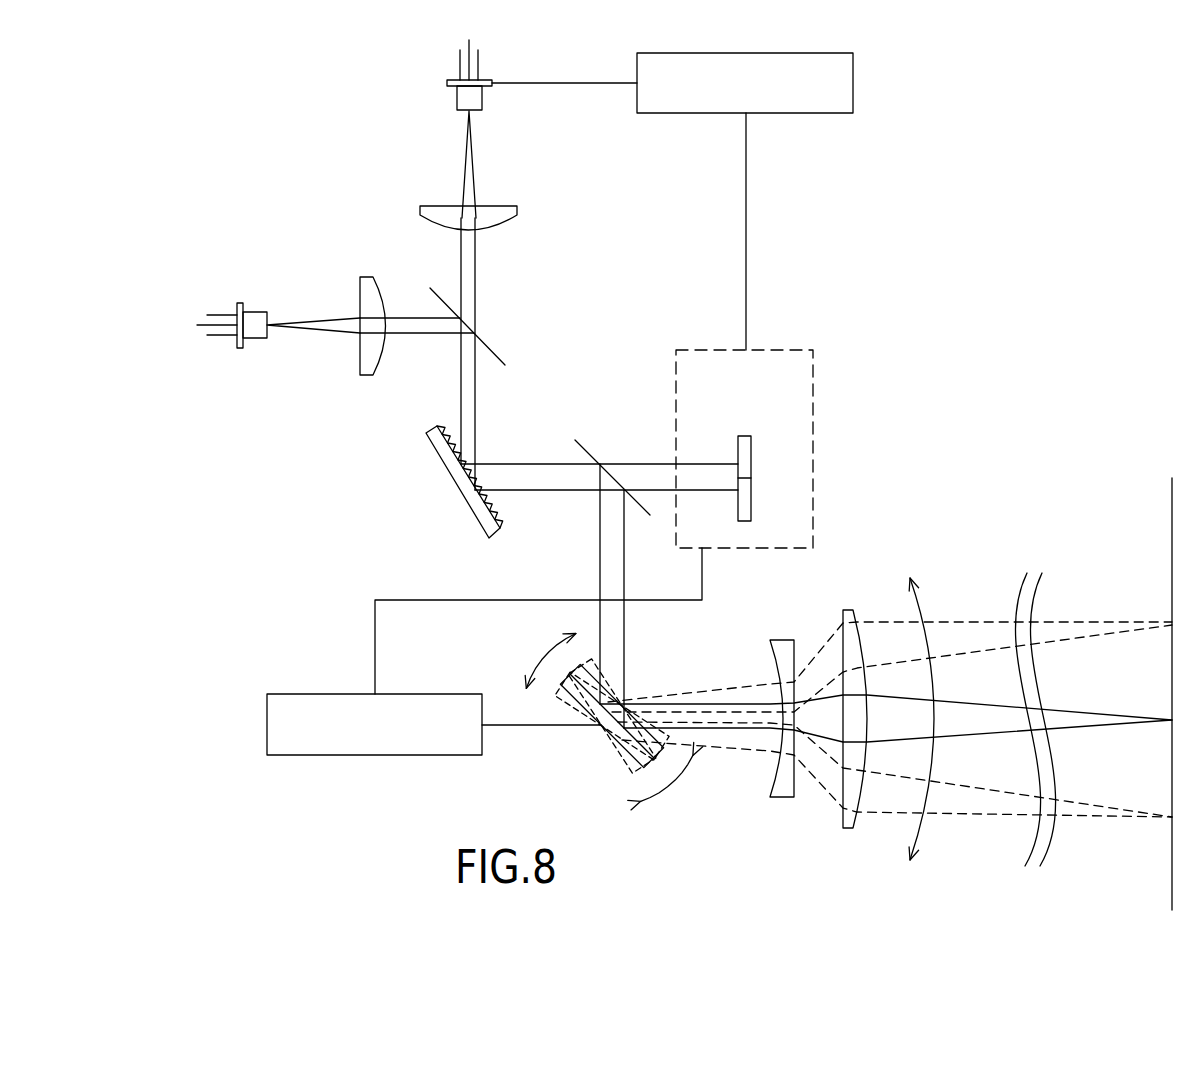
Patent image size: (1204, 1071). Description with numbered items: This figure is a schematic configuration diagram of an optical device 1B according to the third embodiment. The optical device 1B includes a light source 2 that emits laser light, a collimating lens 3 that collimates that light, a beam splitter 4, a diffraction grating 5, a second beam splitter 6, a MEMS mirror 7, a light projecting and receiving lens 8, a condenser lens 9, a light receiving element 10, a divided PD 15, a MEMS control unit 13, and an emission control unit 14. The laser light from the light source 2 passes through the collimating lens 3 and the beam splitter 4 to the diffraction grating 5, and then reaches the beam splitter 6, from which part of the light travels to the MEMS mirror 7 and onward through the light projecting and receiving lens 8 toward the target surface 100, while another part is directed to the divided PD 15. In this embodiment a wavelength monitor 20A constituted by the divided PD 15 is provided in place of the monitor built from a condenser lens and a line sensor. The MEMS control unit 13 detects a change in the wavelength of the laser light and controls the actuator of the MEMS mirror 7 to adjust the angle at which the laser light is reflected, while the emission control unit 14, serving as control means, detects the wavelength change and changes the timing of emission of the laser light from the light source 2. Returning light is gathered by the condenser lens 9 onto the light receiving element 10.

The optical device 1B is at (1020, 180).
The light source 2 is at (482, 98).
The collimating lens 3 is at (517, 210).
The beam splitter 4 is at (500, 356).
The diffraction grating 5 is at (461, 495).
The beam splitter 6 is at (598, 452).
The MEMS mirror 7 is at (627, 755).
The light projecting and receiving lens 8 is at (860, 610).
The condenser lens 9 is at (366, 277).
The light receiving element 10 is at (253, 303).
The MEMS control unit 13 is at (300, 694).
The emission control unit 14 is at (853, 82).
The divided PD 15 is at (745, 436).
The wavelength monitor 20A is at (813, 400).
The screen 100 is at (1173, 493).